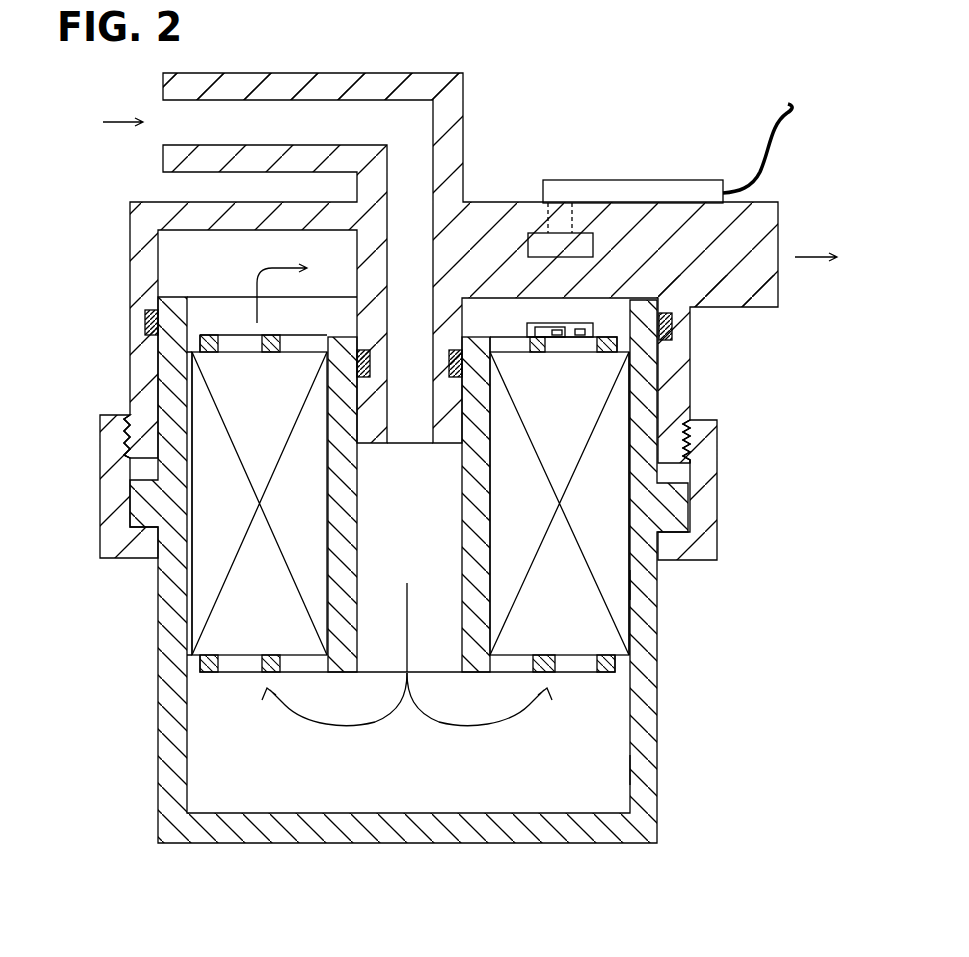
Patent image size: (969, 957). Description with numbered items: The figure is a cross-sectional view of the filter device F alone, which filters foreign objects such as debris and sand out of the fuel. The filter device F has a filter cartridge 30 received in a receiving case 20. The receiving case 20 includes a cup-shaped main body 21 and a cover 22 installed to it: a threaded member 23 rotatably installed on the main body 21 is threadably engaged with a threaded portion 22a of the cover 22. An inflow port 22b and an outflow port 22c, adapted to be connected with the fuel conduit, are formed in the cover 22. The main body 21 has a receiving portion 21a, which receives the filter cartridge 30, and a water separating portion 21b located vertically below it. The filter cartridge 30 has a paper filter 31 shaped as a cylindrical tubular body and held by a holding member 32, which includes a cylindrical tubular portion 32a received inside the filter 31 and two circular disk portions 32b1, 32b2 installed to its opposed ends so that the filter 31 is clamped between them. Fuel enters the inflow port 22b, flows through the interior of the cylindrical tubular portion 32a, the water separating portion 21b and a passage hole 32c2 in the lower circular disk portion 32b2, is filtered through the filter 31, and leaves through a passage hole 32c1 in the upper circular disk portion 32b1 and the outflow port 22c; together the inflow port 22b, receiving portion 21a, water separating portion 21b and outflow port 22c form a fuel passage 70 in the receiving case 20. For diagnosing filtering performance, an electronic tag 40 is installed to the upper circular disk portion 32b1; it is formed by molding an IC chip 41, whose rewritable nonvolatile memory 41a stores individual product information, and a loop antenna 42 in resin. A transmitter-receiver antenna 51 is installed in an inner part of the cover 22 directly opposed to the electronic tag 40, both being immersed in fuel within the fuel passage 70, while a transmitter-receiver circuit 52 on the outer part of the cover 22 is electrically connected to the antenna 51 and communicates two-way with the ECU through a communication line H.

The receiving case 20 is at (435, 454).
The main body 21 is at (157, 746).
The receiving portion 21a is at (625, 588).
The water separating portion 21b is at (625, 774).
The cover 22 is at (435, 264).
The threaded portion 22a is at (132, 430).
The inflow port 22b is at (167, 81).
The outflow port 22c is at (777, 308).
The threaded member 23 is at (100, 456).
The filter cartridge 30 is at (195, 593).
The filter 31 is at (603, 503).
The holding member 32 is at (404, 495).
The cylindrical tubular portion 32a is at (490, 605).
The upper circular disk portion 32b1 is at (183, 326).
The lower circular disk portion 32b2 is at (607, 675).
The passage hole 32c1 is at (236, 332).
The passage hole 32c2 is at (585, 675).
The electronic tag 40 is at (533, 322).
The IC chip 41 is at (543, 325).
The memory 41a is at (557, 330).
The loop antenna 42 is at (580, 329).
The transmitter-receiver antenna 51 is at (521, 237).
The transmitter-receiver circuit 52 is at (643, 180).
The fuel passage 70 is at (435, 454).
The communication line H is at (762, 166).
The filter device F is at (130, 824).